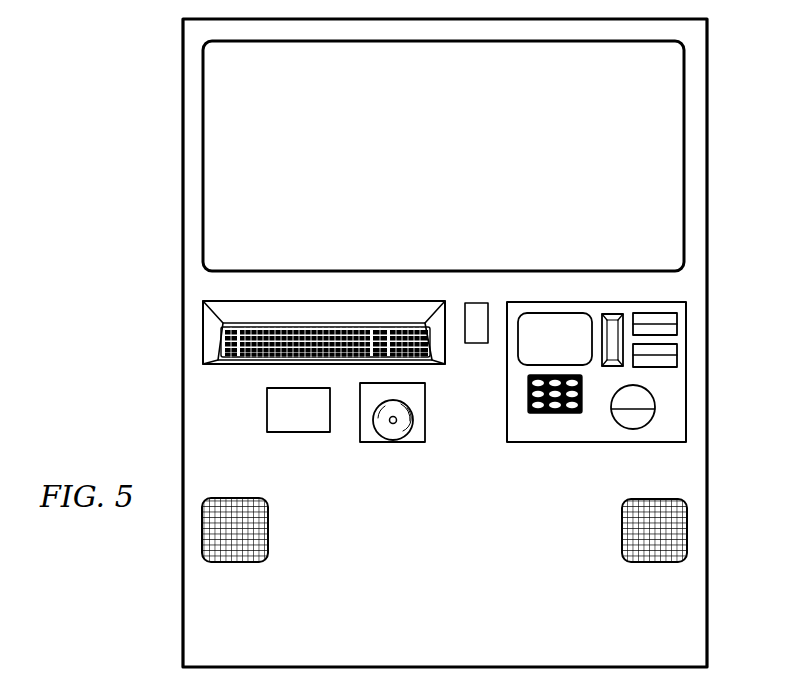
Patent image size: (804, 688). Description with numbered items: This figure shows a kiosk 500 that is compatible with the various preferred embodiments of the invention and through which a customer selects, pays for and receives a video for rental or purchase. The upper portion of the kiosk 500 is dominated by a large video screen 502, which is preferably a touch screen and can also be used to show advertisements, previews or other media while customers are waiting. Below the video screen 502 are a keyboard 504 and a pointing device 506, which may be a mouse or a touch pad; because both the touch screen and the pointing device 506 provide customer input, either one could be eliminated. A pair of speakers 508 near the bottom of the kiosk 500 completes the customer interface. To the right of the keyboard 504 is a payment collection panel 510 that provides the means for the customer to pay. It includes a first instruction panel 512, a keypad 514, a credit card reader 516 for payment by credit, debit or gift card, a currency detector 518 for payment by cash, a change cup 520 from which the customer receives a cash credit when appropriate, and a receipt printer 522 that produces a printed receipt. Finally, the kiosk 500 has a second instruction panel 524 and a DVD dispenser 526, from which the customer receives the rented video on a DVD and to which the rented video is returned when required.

The kiosk 500 is at (135, 215).
The video screen 502 is at (428, 167).
The keyboard 504 is at (243, 365).
The pointing device 506 is at (475, 345).
The speakers 508 is at (233, 563).
The payment collection panel 510 is at (553, 293).
The first instruction panel 512 is at (574, 352).
The keypad 514 is at (551, 415).
The credit card reader 516 is at (612, 313).
The currency detector 518 is at (677, 360).
The change cup 520 is at (634, 430).
The receipt printer 522 is at (677, 322).
The second instruction panel 524 is at (297, 433).
The DVD dispenser 526 is at (394, 443).